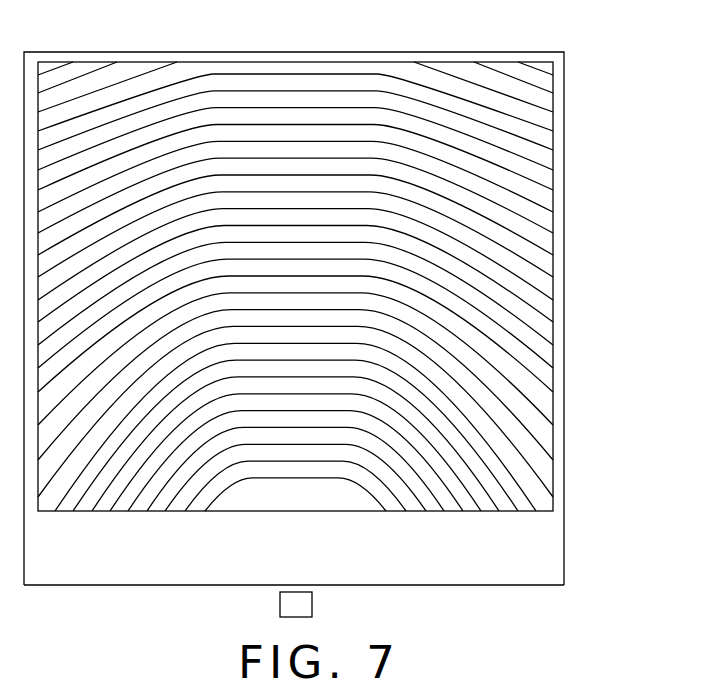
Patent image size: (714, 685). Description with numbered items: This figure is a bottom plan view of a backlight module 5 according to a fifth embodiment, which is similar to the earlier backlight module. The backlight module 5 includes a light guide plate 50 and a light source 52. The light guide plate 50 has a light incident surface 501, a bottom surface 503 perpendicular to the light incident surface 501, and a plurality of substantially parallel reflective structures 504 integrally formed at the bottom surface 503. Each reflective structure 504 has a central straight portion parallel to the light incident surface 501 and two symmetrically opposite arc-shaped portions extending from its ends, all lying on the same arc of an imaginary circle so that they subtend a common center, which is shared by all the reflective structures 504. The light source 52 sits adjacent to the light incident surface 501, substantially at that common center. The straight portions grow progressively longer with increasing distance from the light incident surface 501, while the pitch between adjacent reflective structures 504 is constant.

The backlight module 5 is at (311, 40).
The light guide plate 50 is at (577, 300).
The light incident surface 501 is at (498, 586).
The bottom surface 503 is at (225, 528).
The reflective structures 504 is at (528, 258).
The light source 52 is at (300, 603).